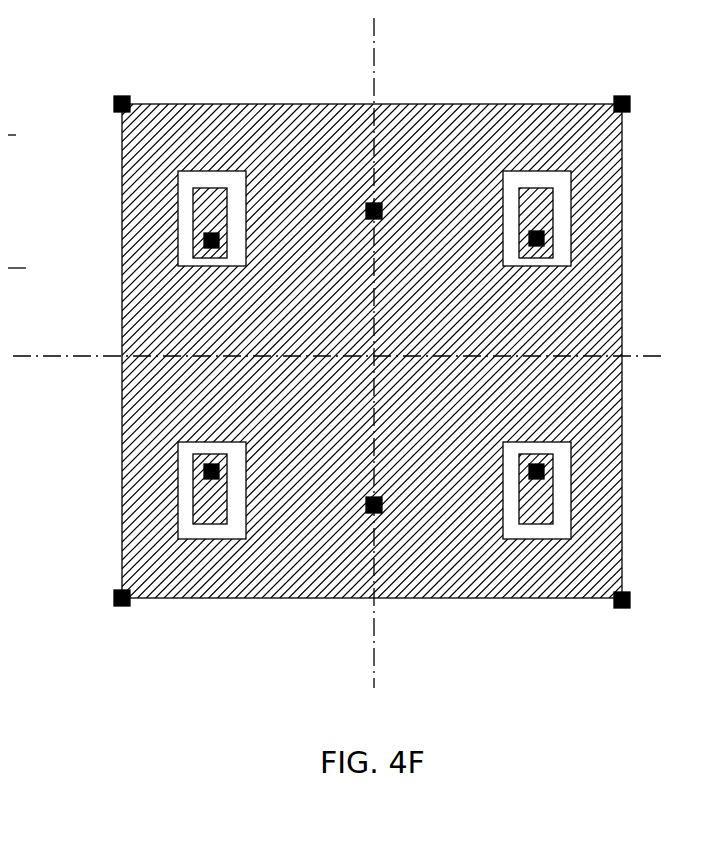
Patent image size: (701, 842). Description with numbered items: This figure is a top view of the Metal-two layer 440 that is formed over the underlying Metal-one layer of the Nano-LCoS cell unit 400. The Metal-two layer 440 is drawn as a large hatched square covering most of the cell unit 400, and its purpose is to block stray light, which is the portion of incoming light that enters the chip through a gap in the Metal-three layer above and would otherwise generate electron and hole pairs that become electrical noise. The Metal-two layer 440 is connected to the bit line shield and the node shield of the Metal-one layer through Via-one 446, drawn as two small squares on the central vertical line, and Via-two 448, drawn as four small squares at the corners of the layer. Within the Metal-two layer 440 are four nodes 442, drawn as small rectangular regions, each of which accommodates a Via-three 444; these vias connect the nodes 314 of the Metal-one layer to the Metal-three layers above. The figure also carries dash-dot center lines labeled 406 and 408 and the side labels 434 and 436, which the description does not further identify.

The Nano-LCoS cell unit 400 is at (337, 93).
The Metal-2 layer 440 is at (194, 96).
The nodes 442 is at (185, 181).
The Via-3 444 is at (628, 480).
The Via-1 446 is at (365, 488).
The Via-2 448 is at (110, 90).
The horizontal axis 406 is at (112, 348).
The vertical axis 408 is at (368, 650).
The gate region 434 is at (28, 344).
The diffusion region 436 is at (30, 342).
The nodes 314 is at (34, 340).